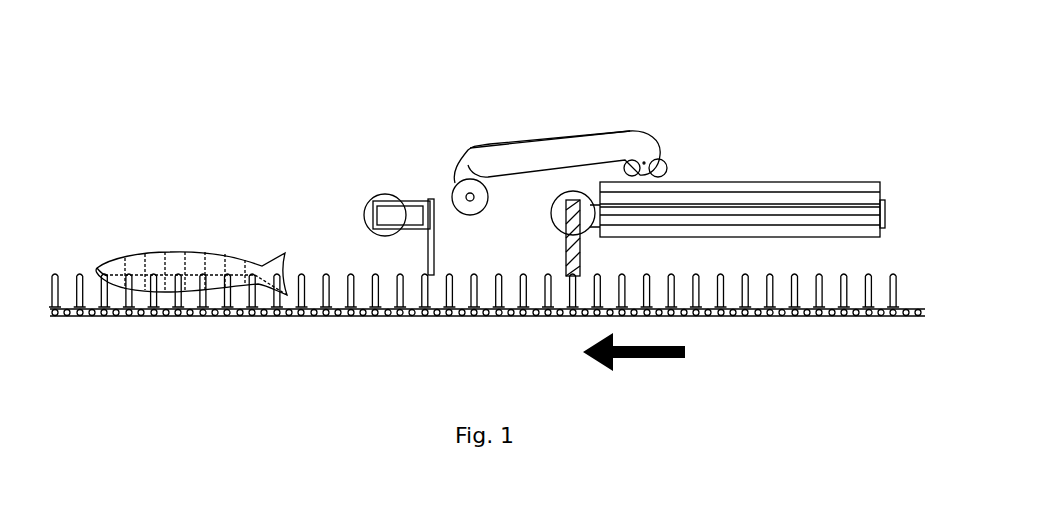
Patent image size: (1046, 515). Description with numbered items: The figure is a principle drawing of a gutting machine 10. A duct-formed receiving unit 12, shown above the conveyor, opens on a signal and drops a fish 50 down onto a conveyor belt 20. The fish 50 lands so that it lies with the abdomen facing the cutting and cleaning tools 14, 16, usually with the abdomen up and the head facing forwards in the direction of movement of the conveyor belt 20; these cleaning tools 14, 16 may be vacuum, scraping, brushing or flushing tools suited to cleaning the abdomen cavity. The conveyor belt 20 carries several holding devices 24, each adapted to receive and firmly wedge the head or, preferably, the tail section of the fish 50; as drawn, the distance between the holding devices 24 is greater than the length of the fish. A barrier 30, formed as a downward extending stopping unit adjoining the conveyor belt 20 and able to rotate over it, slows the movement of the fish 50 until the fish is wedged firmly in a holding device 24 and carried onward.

The gutting machine 10 is at (538, 82).
The duct-formed receiving unit 12 is at (740, 197).
The cutting and cleaning tool 14 is at (470, 190).
The cutting and cleaning tool 16 is at (430, 214).
The conveyor belt 20 is at (330, 313).
The holding device 24 is at (251, 277).
The barrier 30 is at (577, 242).
The fish 50 is at (198, 278).